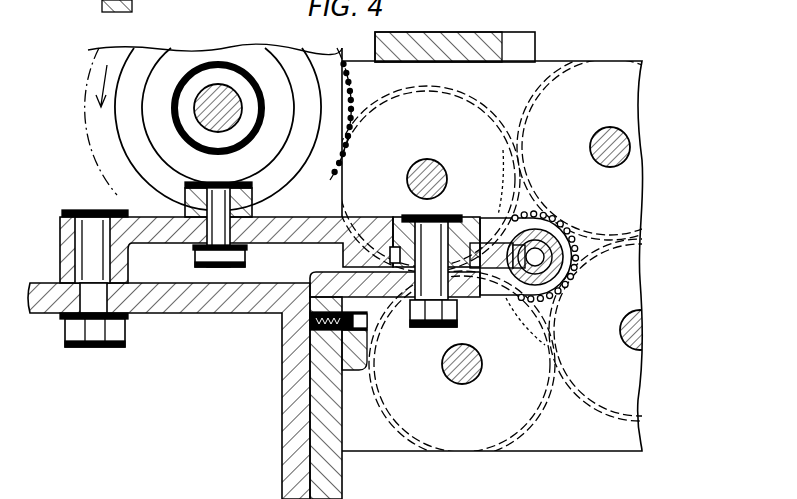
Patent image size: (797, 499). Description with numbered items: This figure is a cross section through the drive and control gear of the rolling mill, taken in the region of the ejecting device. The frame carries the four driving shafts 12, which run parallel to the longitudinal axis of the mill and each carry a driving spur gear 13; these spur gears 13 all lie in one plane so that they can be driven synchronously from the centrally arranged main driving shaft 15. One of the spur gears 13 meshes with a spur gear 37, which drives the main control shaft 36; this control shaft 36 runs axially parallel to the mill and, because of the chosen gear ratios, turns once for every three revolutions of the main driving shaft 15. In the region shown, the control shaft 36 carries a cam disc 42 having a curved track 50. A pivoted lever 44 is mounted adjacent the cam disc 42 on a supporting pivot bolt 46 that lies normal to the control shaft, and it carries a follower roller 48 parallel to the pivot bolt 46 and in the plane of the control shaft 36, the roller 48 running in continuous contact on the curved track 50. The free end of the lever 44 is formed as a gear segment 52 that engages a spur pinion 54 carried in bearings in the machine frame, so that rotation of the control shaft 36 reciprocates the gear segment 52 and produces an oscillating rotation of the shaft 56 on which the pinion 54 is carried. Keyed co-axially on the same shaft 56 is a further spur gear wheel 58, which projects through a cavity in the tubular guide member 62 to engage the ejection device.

The driving shaft 12 is at (427, 163).
The spur gear 13 is at (474, 110).
The main driving shaft 15 is at (560, 218).
The main control shaft 36 is at (218, 86).
The spur gear 37 is at (90, 67).
The cam disc 42 is at (128, 163).
The pivoted lever 44 is at (299, 236).
The pivot bolt 46 is at (83, 238).
The follower roller 48 is at (185, 210).
The curved track 50 is at (128, 127).
The gear segment 52 is at (390, 224).
The spur pinion 54 is at (487, 218).
The shaft 56 is at (444, 217).
The spur gear wheel 58 is at (505, 277).
The tubular guide member 62 is at (576, 267).